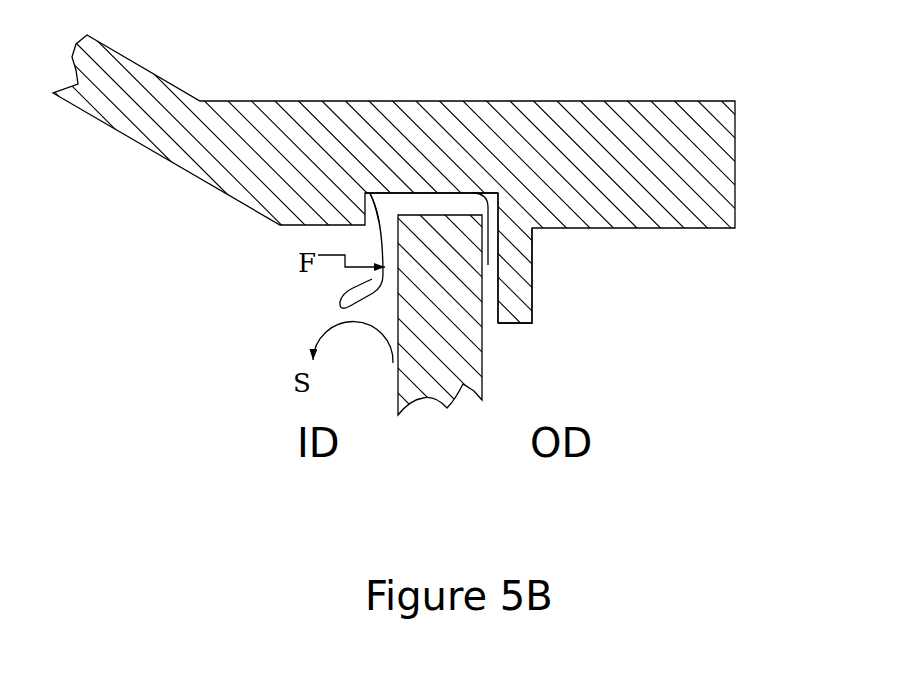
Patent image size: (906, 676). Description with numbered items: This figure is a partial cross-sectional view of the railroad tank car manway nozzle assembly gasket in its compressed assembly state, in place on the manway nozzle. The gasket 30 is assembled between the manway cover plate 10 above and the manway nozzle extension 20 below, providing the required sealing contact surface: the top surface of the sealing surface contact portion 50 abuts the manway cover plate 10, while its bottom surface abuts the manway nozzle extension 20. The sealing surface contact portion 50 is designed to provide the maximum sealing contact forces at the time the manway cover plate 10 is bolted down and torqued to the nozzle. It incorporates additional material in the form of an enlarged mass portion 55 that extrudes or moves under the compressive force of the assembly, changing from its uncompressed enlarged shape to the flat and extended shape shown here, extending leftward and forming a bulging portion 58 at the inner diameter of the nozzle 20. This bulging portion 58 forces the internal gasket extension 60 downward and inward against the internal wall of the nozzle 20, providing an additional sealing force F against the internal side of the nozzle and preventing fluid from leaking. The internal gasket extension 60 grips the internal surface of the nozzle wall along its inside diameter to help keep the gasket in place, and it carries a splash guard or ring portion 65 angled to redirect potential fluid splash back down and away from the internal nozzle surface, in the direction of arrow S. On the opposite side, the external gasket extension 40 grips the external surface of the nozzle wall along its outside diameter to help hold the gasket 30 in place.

The manway cover plate 10 is at (453, 200).
The manway nozzle extension 20 is at (390, 250).
The gasket 30 is at (586, 258).
The external gasket extension 40 is at (583, 275).
The sealing surface contact portion 50 is at (533, 158).
The enlarged mass portion 55 is at (386, 114).
The bulging portion 58 is at (227, 196).
The internal gasket extension 60 is at (297, 250).
The splash guard or ring portion 65 is at (265, 289).